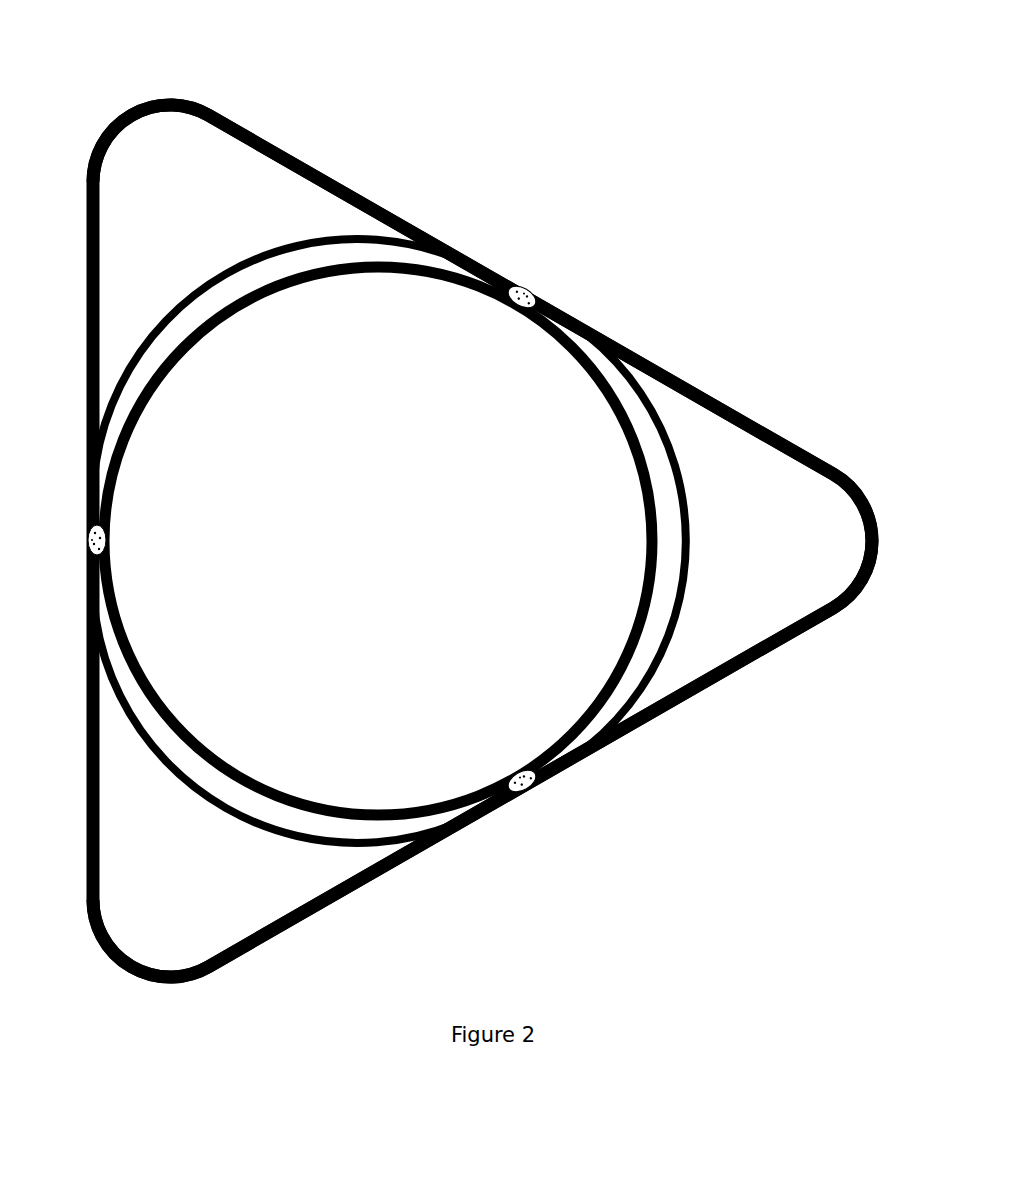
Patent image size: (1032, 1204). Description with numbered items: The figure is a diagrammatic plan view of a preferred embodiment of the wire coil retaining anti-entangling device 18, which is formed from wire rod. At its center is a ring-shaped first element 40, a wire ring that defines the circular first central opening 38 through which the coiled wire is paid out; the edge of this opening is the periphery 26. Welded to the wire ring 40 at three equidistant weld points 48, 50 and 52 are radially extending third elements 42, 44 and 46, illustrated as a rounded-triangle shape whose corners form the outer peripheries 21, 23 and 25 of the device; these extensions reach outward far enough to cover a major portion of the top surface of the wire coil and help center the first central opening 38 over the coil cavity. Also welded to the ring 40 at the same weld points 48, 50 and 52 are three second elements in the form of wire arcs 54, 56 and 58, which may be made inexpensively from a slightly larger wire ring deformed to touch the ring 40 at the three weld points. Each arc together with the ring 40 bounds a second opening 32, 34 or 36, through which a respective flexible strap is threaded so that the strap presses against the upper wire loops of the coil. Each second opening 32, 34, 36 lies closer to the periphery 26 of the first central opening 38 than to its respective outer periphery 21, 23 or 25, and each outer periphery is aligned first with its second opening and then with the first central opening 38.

The anti-entangling device 18 is at (627, 188).
The outer periphery 21 is at (873, 496).
The outer periphery 23 is at (106, 958).
The outer periphery 25 is at (202, 103).
The periphery of the first central opening 26 is at (597, 352).
The second opening 32 is at (664, 488).
The second opening 34 is at (211, 784).
The second opening 36 is at (212, 300).
The first central opening 38 is at (348, 551).
The ring-shaped first element 40 is at (329, 262).
The radially extending third element 42 is at (815, 450).
The radially extending third element 44 is at (272, 935).
The radially extending third element 46 is at (122, 118).
The weld point 48 is at (529, 791).
The weld point 50 is at (89, 526).
The weld point 52 is at (539, 294).
The wire arc 54 is at (687, 602).
The wire arc 56 is at (265, 838).
The wire arc 58 is at (249, 247).